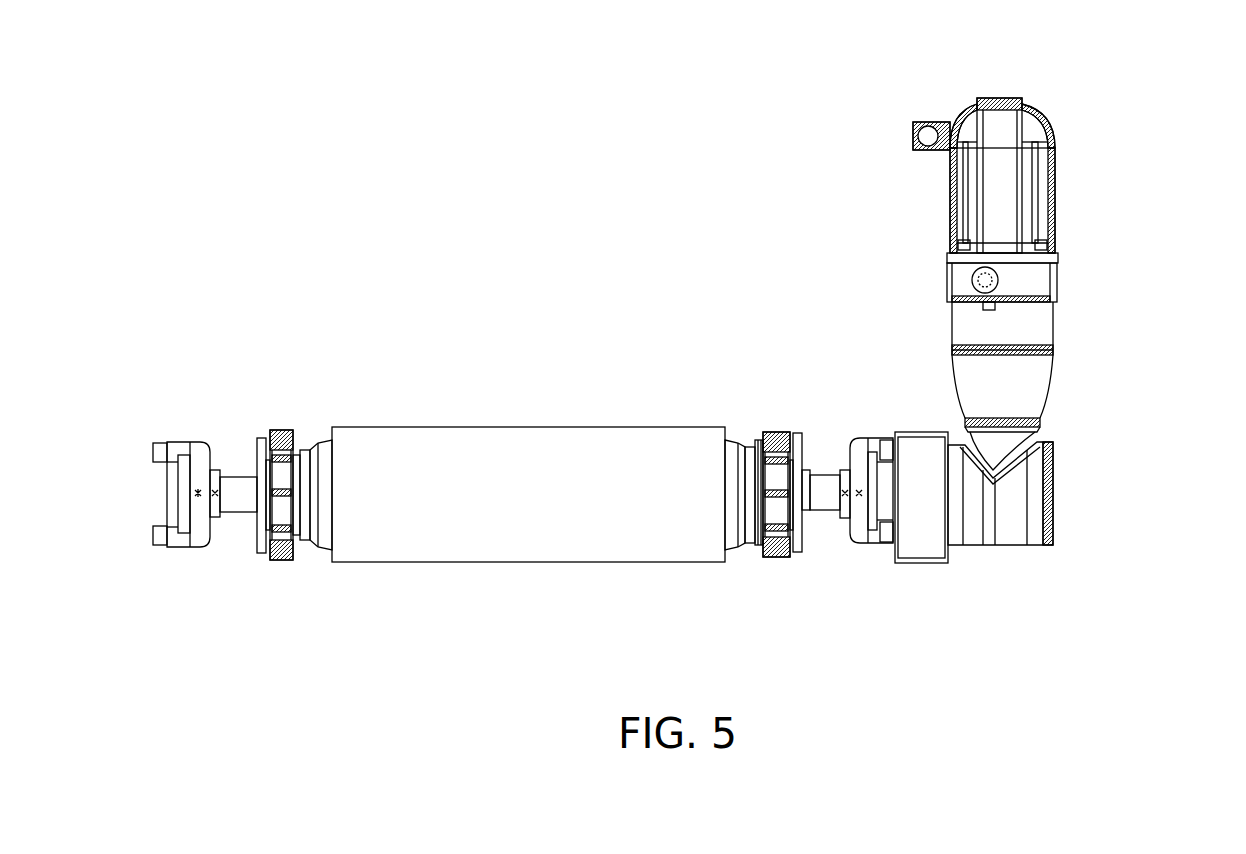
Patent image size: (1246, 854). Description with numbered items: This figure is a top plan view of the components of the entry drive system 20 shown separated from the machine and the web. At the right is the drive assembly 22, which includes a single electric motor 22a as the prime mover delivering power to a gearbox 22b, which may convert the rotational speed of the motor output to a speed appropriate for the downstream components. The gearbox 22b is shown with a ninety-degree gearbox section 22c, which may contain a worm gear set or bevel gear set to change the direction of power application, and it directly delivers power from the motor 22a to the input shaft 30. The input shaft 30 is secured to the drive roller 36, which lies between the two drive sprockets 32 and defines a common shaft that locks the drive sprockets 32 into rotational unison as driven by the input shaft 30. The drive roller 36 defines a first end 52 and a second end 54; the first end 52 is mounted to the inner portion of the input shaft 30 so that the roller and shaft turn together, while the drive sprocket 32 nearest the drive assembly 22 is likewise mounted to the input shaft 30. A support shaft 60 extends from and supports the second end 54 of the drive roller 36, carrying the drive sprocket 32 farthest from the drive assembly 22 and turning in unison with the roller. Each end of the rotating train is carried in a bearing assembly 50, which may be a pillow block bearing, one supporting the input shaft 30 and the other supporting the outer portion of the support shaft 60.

The drive system 20 is at (634, 158).
The drive assembly 22 is at (795, 168).
The electric motor 22a is at (1073, 210).
The gearbox 22b is at (1060, 287).
The 90-degree gearbox section 22c is at (1078, 513).
The input shaft 30 is at (820, 513).
The drive sprocket 32 is at (280, 568).
The drive roller 36 is at (537, 497).
The bearing assembly 50 is at (187, 435).
The first end 52 is at (703, 397).
The second end 54 is at (349, 387).
The support shaft 60 is at (237, 514).